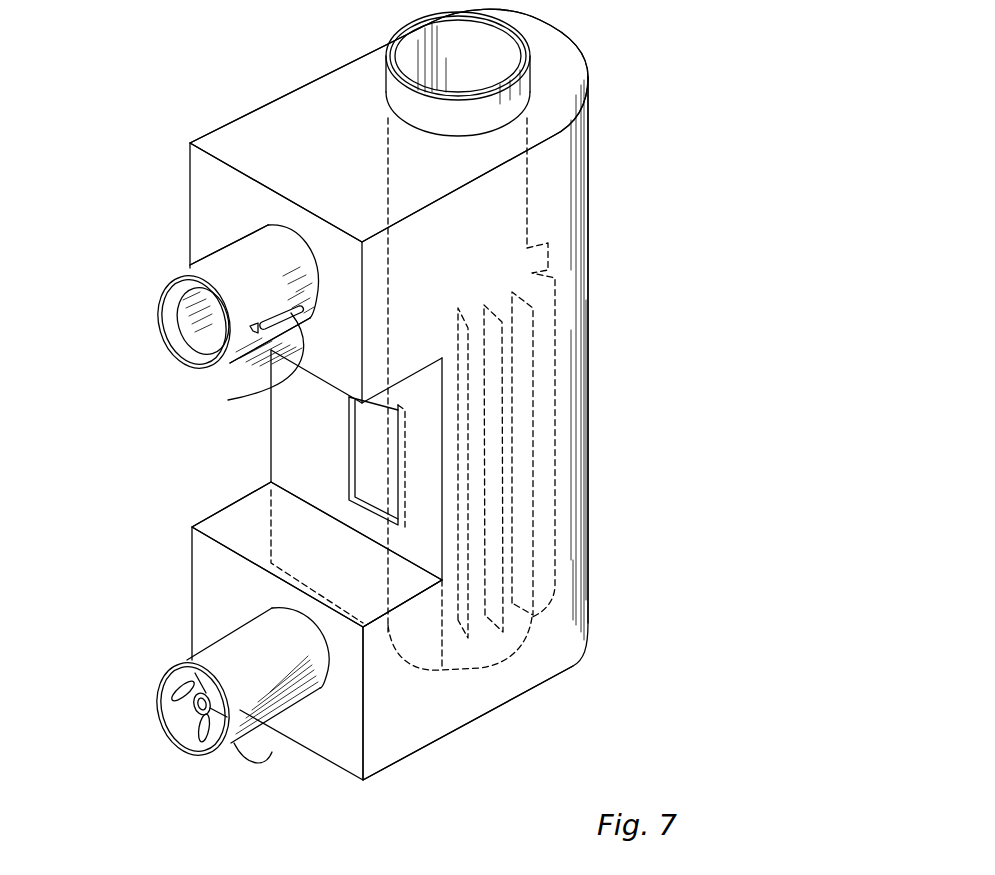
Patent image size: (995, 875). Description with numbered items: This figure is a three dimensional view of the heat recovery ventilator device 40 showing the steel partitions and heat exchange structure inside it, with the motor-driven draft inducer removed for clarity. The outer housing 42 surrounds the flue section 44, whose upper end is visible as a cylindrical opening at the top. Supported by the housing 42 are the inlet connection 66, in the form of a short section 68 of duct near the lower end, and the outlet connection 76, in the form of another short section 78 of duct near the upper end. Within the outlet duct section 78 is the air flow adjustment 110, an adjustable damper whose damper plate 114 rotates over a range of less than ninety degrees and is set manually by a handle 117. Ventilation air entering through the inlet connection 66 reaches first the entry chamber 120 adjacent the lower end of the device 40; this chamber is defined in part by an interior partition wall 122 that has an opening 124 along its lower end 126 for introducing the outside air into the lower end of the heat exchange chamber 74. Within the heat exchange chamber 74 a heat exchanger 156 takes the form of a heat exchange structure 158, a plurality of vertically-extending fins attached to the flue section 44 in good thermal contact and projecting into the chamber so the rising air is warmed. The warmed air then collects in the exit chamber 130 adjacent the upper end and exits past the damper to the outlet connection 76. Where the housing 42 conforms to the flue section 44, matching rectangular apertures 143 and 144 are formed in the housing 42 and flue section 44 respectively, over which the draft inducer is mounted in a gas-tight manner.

The heat recovery ventilator device 40 is at (653, 360).
The outer housing 42 is at (582, 208).
The flue section 44 is at (480, 44).
The inlet connection 66 is at (176, 716).
The short section of duct 68 is at (268, 752).
The heat exchange chamber 74 is at (567, 430).
The outlet connection 76 is at (180, 313).
The short section of duct 78 is at (233, 268).
The air flow adjustment 110 is at (152, 258).
The damper plate 114 is at (213, 335).
The handle 117 is at (254, 333).
The entry chamber 120 is at (382, 710).
The interior partition wall 122 is at (418, 625).
The opening 124 is at (432, 670).
The lower end 126 is at (388, 633).
The exit chamber 130 is at (292, 150).
The rectangular aperture 143 is at (348, 401).
The rectangular aperture 144 is at (400, 405).
The heat exchanger 156 is at (563, 327).
The heat exchange structure 158 is at (558, 402).